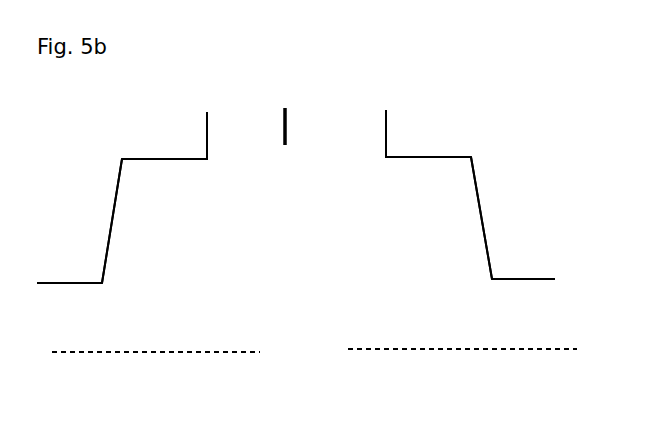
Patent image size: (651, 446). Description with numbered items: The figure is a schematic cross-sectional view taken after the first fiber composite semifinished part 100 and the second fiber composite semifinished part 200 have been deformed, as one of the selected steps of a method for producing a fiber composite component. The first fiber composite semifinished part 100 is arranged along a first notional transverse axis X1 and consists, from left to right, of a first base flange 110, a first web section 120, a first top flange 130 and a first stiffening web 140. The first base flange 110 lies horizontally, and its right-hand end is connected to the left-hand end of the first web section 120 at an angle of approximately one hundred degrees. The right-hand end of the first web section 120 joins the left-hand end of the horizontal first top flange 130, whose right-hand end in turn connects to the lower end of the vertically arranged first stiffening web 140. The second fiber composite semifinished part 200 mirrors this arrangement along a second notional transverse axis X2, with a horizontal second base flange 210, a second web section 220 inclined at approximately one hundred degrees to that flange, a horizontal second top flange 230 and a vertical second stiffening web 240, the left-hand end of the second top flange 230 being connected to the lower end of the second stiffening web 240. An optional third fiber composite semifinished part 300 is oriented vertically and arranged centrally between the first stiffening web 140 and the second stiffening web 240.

The first fiber composite semifinished part 100 is at (149, 206).
The first base flange 110 is at (80, 283).
The first web section 120 is at (108, 248).
The first top flange 130 is at (170, 159).
The first stiffening web 140 is at (207, 135).
The second fiber composite semifinished part 200 is at (449, 191).
The second base flange 210 is at (520, 279).
The second web section 220 is at (485, 232).
The second top flange 230 is at (450, 157).
The second stiffening web 240 is at (388, 130).
The third fiber composite semifinished part 300 is at (283, 128).
The first notional transverse axis X1 is at (142, 352).
The second notional transverse axis X2 is at (449, 349).